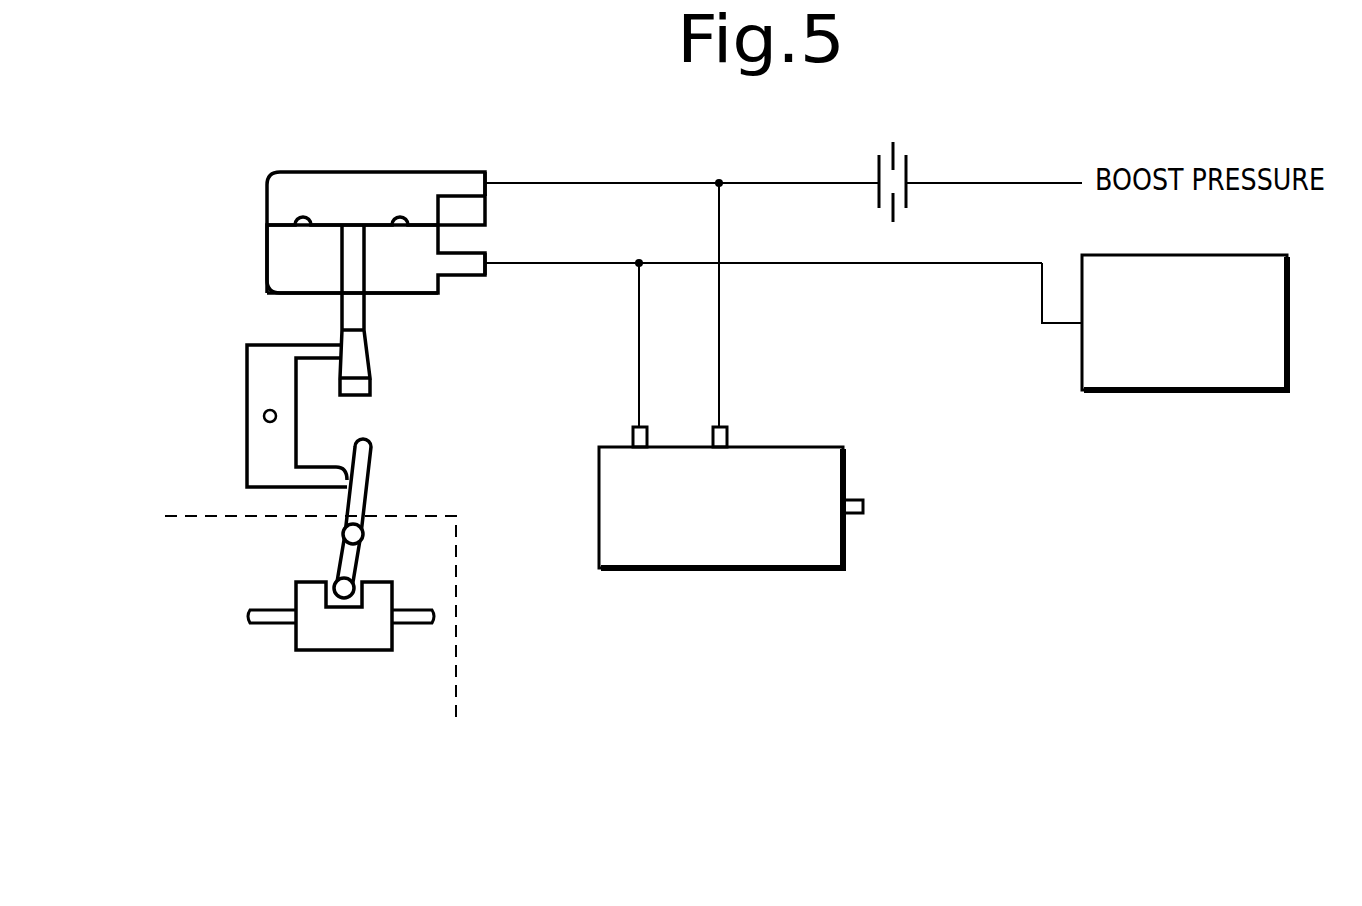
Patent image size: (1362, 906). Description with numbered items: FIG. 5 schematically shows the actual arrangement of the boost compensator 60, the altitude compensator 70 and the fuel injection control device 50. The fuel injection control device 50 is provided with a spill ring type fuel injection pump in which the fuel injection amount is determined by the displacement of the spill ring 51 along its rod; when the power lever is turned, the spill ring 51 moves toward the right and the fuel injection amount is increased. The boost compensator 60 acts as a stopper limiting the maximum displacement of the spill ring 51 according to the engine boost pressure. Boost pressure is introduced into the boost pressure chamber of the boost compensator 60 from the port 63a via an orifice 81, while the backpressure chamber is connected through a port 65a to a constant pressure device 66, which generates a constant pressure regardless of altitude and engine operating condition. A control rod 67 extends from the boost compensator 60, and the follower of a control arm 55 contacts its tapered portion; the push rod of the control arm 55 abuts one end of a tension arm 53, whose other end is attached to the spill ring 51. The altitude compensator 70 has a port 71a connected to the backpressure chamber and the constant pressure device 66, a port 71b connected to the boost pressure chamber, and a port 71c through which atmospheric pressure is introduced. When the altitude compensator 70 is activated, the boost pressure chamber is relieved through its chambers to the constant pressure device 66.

The fuel injection control device 50 is at (456, 676).
The spill ring 51 is at (350, 638).
The tension arm 53 is at (363, 468).
The control arm 55 is at (258, 378).
The boost compensator 60 is at (365, 172).
The port 63a is at (475, 170).
The port 65a is at (473, 253).
The constant pressure device 66 is at (1168, 390).
The control rod 67 is at (357, 308).
The altitude compensator 70 is at (727, 568).
The port 71a is at (633, 432).
The port 71b is at (727, 435).
The port 71c is at (850, 500).
The orifice 81 is at (900, 150).